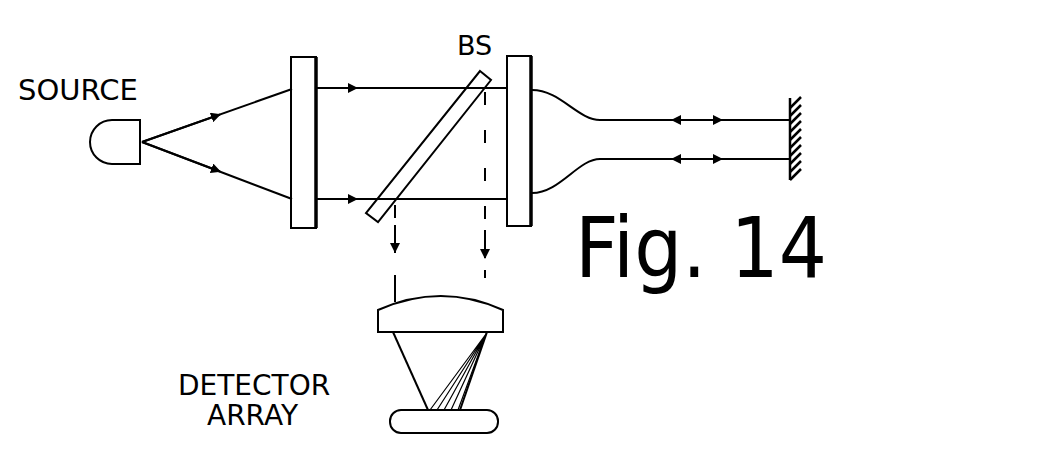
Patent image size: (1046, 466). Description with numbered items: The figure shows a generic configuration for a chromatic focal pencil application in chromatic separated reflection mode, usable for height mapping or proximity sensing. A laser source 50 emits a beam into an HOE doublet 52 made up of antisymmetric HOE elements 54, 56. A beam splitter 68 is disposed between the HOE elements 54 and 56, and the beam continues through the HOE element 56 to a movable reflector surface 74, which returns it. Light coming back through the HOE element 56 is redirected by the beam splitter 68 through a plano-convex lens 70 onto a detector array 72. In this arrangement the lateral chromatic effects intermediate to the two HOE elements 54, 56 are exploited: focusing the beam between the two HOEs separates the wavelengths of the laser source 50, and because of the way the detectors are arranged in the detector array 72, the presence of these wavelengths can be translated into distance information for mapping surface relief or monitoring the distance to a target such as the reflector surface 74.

The laser source 50 is at (128, 167).
The HOE doublet 52 is at (335, 42).
The HOE element 54 is at (292, 230).
The HOE element 56 is at (518, 227).
The beam splitter 68 is at (443, 118).
The plano-convex lens 70 is at (505, 318).
The detector array 72 is at (500, 420).
The movable reflector surface 74 is at (788, 168).